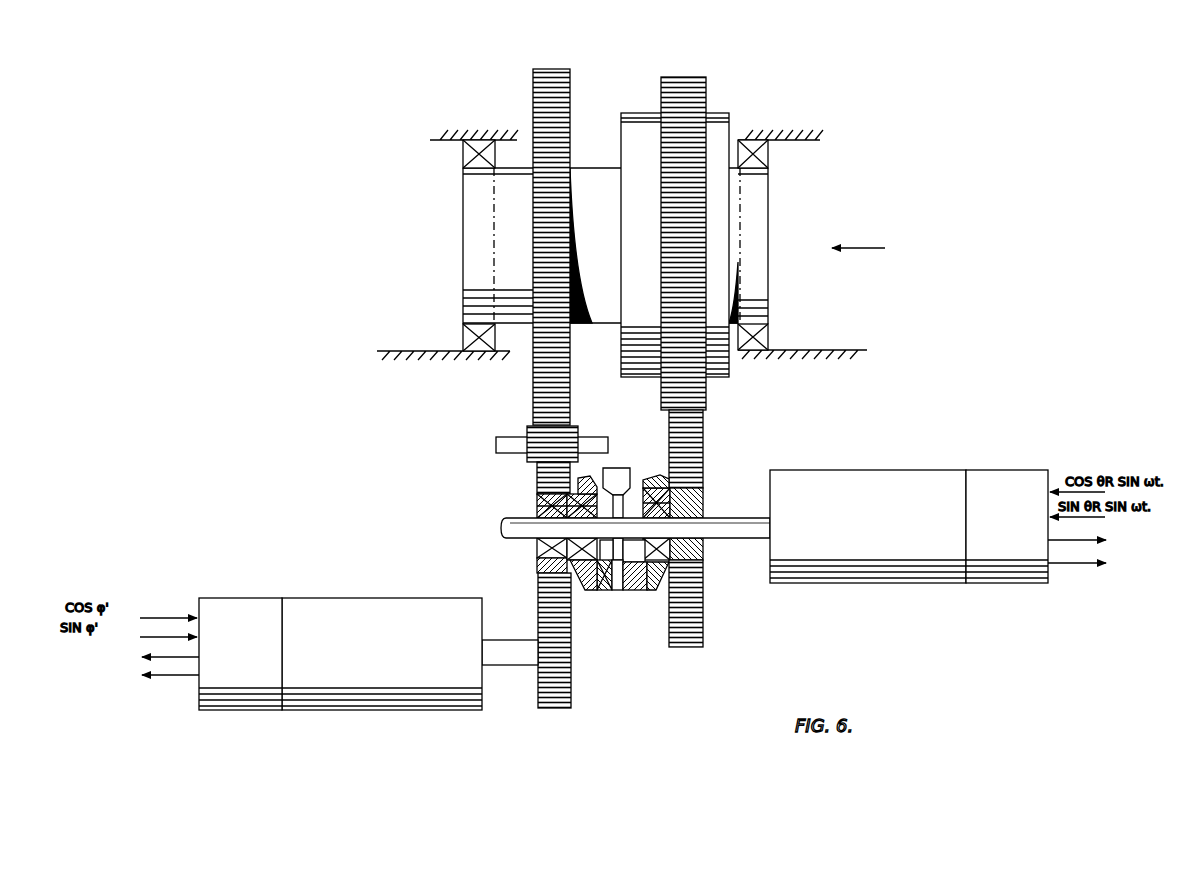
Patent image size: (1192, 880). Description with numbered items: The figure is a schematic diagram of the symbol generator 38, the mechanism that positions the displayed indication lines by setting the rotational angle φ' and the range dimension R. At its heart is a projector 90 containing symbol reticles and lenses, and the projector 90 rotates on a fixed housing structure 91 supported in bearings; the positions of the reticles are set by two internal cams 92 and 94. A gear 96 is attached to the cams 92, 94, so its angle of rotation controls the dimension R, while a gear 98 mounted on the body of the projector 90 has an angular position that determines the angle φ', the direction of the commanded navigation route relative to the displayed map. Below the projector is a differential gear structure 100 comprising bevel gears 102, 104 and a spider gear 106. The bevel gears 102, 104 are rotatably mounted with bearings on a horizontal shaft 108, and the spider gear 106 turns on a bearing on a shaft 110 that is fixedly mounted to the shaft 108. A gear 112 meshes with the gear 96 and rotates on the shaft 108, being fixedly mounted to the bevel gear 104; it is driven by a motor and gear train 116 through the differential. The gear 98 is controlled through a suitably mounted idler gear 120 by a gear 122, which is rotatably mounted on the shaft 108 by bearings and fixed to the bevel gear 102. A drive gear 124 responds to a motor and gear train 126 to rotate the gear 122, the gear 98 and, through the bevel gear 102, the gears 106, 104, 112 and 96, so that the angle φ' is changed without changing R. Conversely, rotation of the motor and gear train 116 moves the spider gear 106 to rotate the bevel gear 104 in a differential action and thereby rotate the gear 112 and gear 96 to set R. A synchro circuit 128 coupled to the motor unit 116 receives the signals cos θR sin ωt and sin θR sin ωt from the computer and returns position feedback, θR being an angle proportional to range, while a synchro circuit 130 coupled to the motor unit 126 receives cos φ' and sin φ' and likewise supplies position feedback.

The gear assembly 38 is at (473, 519).
The projector 90 is at (456, 297).
The fixed housing structure 91 is at (456, 139).
The internal cam 92 is at (722, 122).
The internal cam 94 is at (629, 113).
The gear 96 is at (703, 77).
The gear 98 is at (557, 69).
The differential gear structure 100 is at (638, 600).
The bevel gear 102 is at (583, 487).
The bevel gear 104 is at (672, 575).
The spider gear 106 is at (596, 592).
The shaft 108 is at (723, 518).
The shaft 110 is at (540, 543).
The gear 112 is at (706, 430).
The motor and gear train 116 is at (894, 470).
The idler gear 120 is at (578, 428).
The gear 122 is at (538, 497).
The drive gear 124 is at (558, 690).
The motor and gear train 126 is at (414, 584).
The synchro circuit 128 is at (1019, 470).
The synchro circuit 130 is at (250, 598).